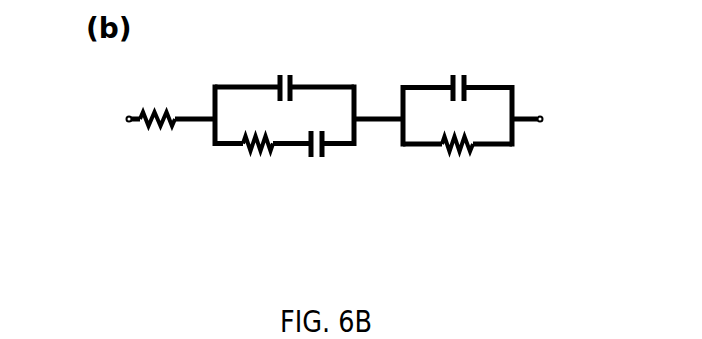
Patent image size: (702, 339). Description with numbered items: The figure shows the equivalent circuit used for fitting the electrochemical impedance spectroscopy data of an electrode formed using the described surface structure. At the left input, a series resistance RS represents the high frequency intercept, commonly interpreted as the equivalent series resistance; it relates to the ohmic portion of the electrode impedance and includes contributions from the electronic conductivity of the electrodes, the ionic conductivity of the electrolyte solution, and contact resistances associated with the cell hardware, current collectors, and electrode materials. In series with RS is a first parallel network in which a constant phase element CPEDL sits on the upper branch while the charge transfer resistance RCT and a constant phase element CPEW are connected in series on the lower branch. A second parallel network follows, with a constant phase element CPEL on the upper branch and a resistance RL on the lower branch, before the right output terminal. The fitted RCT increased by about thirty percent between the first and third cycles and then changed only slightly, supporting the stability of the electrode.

The equivalent series resistance RS is at (159, 101).
The double layer constant phase element CPEDL is at (280, 73).
The charge transfer resistance RCT is at (264, 165).
The Warburg constant phase element CPEW is at (341, 163).
The constant phase element of layer CPEL is at (454, 74).
The layer resistance RL is at (461, 166).